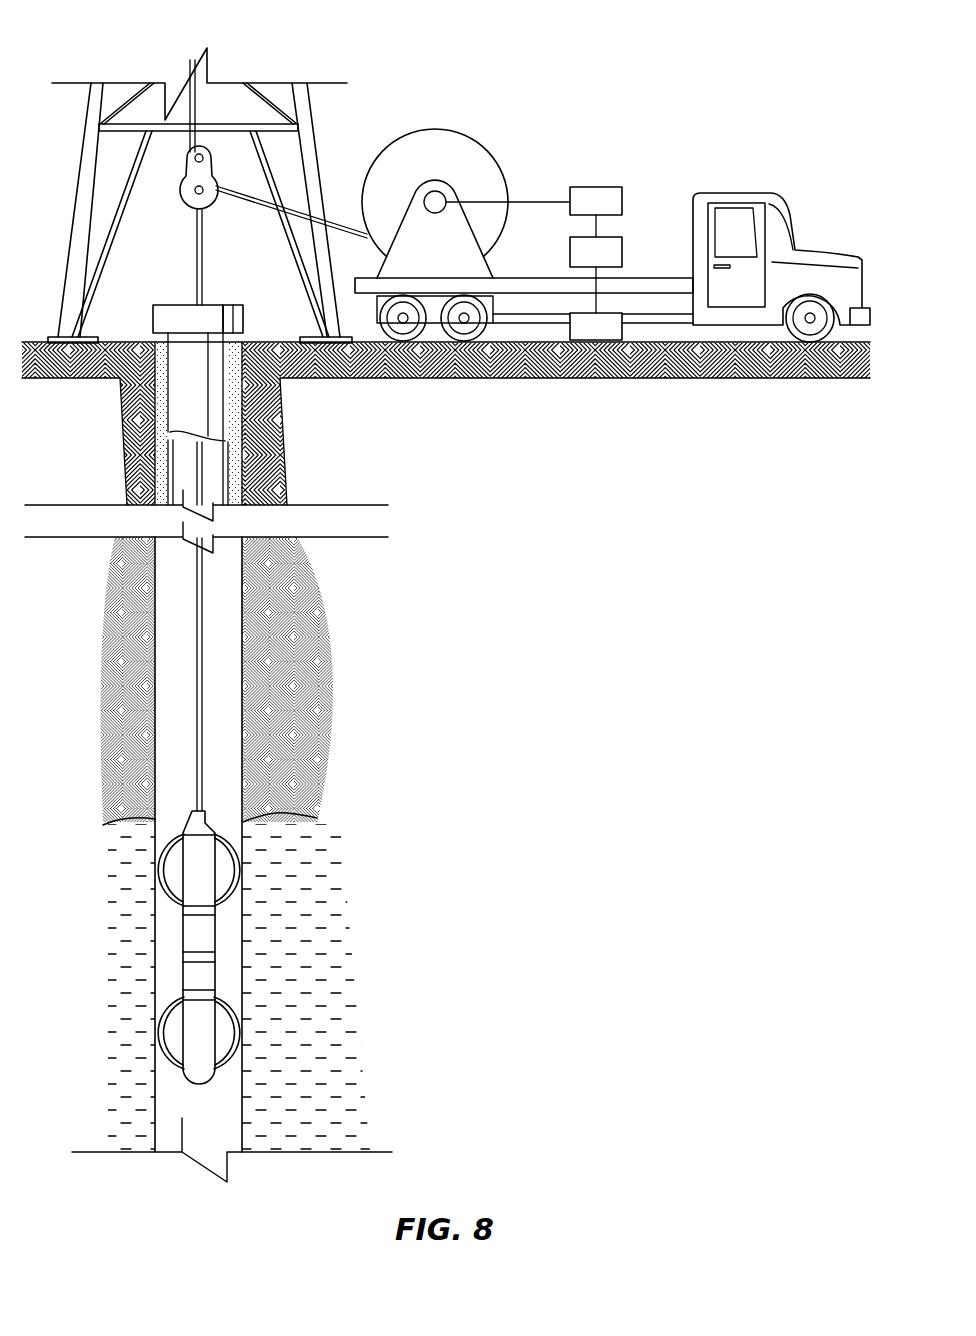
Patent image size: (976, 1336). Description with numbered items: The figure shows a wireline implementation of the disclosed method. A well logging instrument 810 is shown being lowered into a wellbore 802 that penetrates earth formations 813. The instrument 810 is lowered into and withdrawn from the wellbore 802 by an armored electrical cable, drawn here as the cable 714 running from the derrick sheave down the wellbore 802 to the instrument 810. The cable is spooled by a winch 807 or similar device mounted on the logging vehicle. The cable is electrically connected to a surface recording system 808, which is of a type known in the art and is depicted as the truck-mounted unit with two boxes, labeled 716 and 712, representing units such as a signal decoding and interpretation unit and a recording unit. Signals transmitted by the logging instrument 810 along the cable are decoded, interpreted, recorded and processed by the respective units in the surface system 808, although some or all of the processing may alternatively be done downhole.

The wireline cable 714 is at (196, 279).
The winch 807 is at (433, 128).
The surface recording system 808 is at (512, 143).
The telemetry interface unit 716 is at (610, 186).
The surface acquisition unit 712 is at (610, 237).
The earth formations 813 is at (355, 658).
The well logging instrument 810 is at (222, 933).
The wellbore 802 is at (165, 1098).